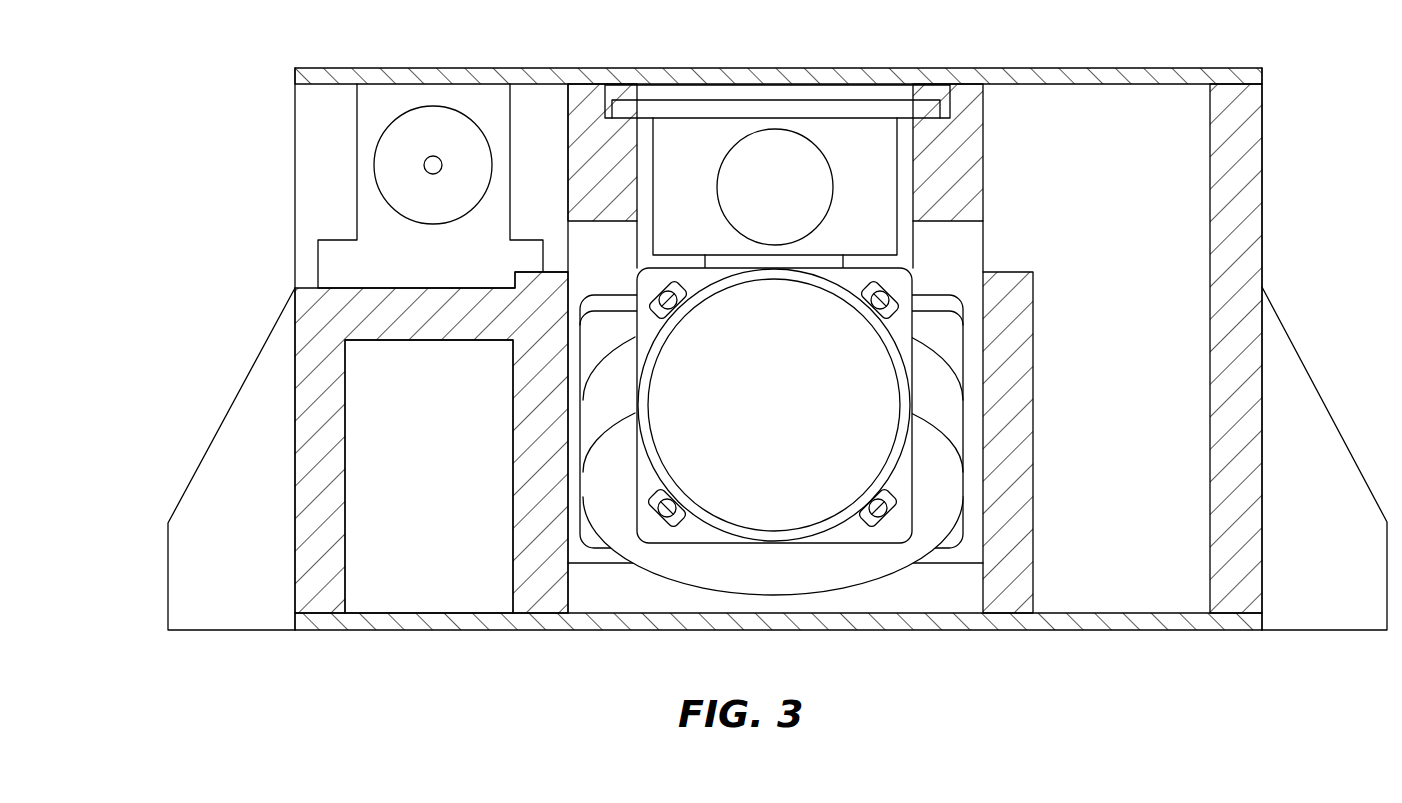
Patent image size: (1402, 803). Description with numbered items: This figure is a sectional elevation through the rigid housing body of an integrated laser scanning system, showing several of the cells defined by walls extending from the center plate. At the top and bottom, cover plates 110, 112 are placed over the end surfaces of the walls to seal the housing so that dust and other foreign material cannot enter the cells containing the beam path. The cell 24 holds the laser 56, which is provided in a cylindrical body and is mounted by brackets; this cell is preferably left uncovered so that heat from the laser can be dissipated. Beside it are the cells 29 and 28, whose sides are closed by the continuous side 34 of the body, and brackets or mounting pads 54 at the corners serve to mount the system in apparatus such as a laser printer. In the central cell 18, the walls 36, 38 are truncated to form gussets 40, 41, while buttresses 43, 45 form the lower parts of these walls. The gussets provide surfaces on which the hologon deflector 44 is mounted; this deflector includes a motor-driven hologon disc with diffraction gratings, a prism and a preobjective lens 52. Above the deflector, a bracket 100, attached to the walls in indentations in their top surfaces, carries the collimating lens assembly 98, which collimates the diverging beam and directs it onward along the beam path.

The cover plate 110 is at (1123, 68).
The cover plate 112 is at (1102, 613).
The brackets or mounting pads 54 is at (187, 492).
The cell 24 is at (486, 268).
The laser 56 is at (428, 224).
The buttress 43 is at (513, 372).
The cell 29 is at (441, 493).
The wall 36 is at (568, 131).
The wall 38 is at (985, 141).
The gusset 41 is at (975, 249).
The buttress 45 is at (1035, 334).
The side 34 is at (1215, 217).
The cell 28 is at (1136, 433).
The bracket 100 is at (683, 113).
The collimating lens assembly 98 is at (833, 182).
The cell 18 is at (961, 593).
The gusset 40 is at (580, 565).
The hologon deflector 44 is at (897, 568).
The preobjective lens 52 is at (826, 284).